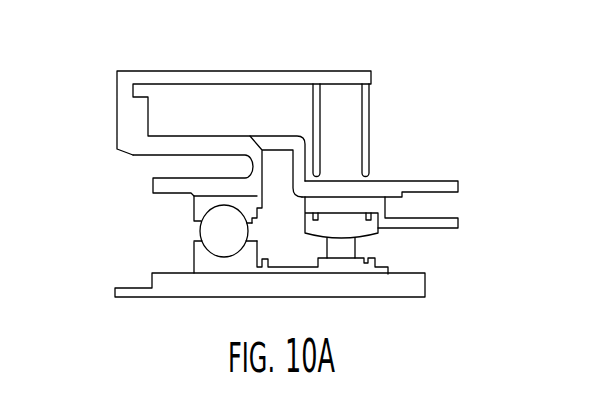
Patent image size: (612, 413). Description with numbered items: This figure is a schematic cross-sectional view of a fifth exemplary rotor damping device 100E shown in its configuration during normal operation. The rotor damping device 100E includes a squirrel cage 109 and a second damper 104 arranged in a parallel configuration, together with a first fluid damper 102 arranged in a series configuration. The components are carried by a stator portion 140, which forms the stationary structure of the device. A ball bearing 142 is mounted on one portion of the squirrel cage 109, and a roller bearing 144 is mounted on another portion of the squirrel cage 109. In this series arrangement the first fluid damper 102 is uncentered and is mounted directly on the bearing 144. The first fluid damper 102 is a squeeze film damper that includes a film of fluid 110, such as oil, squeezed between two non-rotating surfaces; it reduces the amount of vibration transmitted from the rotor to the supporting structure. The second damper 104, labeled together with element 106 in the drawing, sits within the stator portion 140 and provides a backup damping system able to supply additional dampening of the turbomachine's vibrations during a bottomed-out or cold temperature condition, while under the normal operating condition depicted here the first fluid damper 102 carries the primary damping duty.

The rotor damping device 100E is at (96, 66).
The stator portion 140 is at (207, 69).
The squirrel cage 109 is at (190, 135).
The second damper 104 is at (347, 110).
The electrode layer 106 is at (415, 127).
The film of fluid 110 is at (365, 213).
The ball bearing 142 is at (200, 228).
The roller bearing 144 is at (326, 238).
The first fluid damper 102 is at (388, 236).